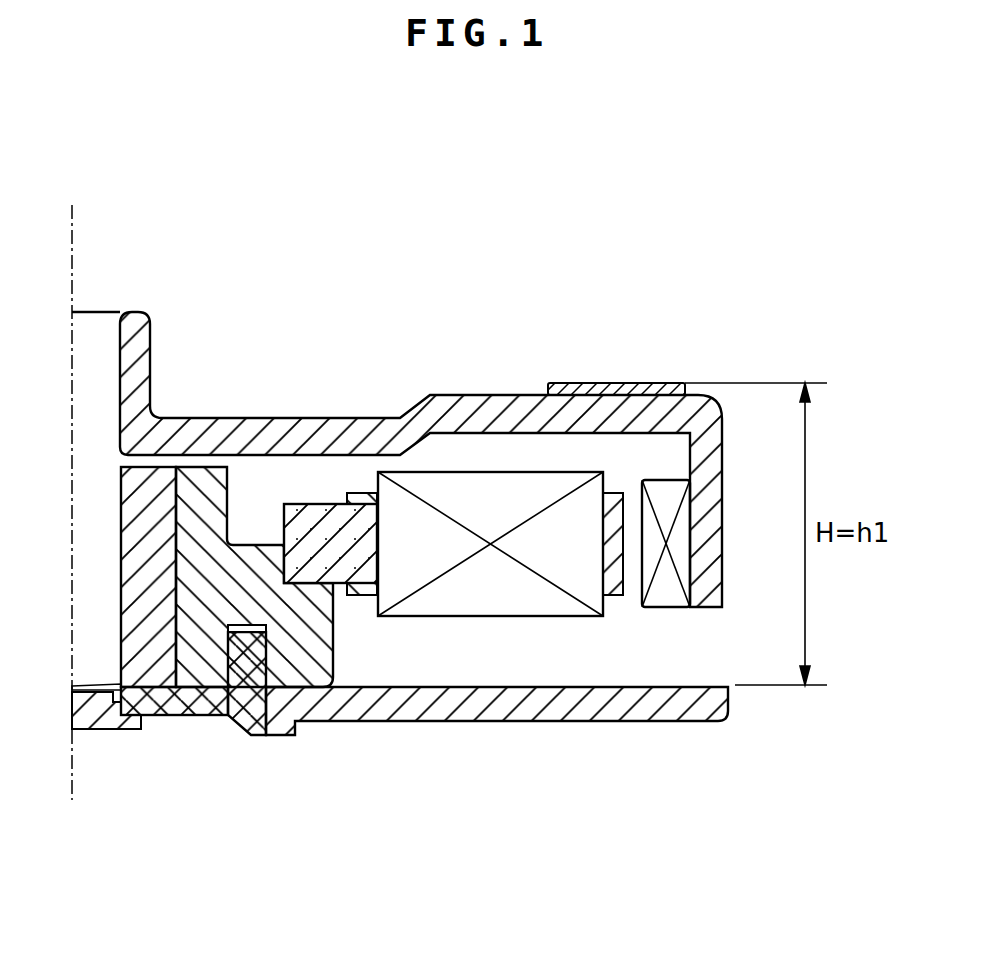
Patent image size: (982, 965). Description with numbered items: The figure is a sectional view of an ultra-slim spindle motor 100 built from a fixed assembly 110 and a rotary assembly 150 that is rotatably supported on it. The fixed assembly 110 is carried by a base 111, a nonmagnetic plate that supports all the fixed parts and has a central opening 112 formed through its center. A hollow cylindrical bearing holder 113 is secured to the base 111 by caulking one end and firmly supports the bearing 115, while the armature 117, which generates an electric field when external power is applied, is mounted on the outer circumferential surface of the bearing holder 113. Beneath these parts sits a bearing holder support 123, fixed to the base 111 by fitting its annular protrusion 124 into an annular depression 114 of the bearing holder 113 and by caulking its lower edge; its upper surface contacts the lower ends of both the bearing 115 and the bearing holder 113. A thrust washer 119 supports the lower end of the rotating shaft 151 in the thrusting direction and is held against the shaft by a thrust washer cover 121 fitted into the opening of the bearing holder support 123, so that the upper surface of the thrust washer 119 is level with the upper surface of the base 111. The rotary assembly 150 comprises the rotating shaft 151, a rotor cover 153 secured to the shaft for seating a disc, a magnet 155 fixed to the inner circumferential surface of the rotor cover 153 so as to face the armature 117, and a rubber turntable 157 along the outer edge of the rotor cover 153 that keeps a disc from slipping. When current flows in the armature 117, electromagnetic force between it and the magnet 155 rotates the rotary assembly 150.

The spindle motor 100 is at (265, 131).
The fixed assembly 110 is at (517, 845).
The base 111 is at (497, 712).
The central opening 112 is at (272, 737).
The bearing holder 113 is at (310, 668).
The annular depression 114 is at (266, 644).
The bearing 115 is at (157, 675).
The armature 117 is at (441, 603).
The thrust washer 119 is at (93, 697).
The thrust washer cover 121 is at (103, 717).
The bearing holder support 123 is at (252, 713).
The annular protrusion 124 is at (238, 662).
The rotary assembly 150 is at (680, 228).
The rotating shaft 151 is at (88, 330).
The rotor cover 153 is at (323, 428).
The magnet 155 is at (667, 490).
The rubber turntable 157 is at (581, 383).